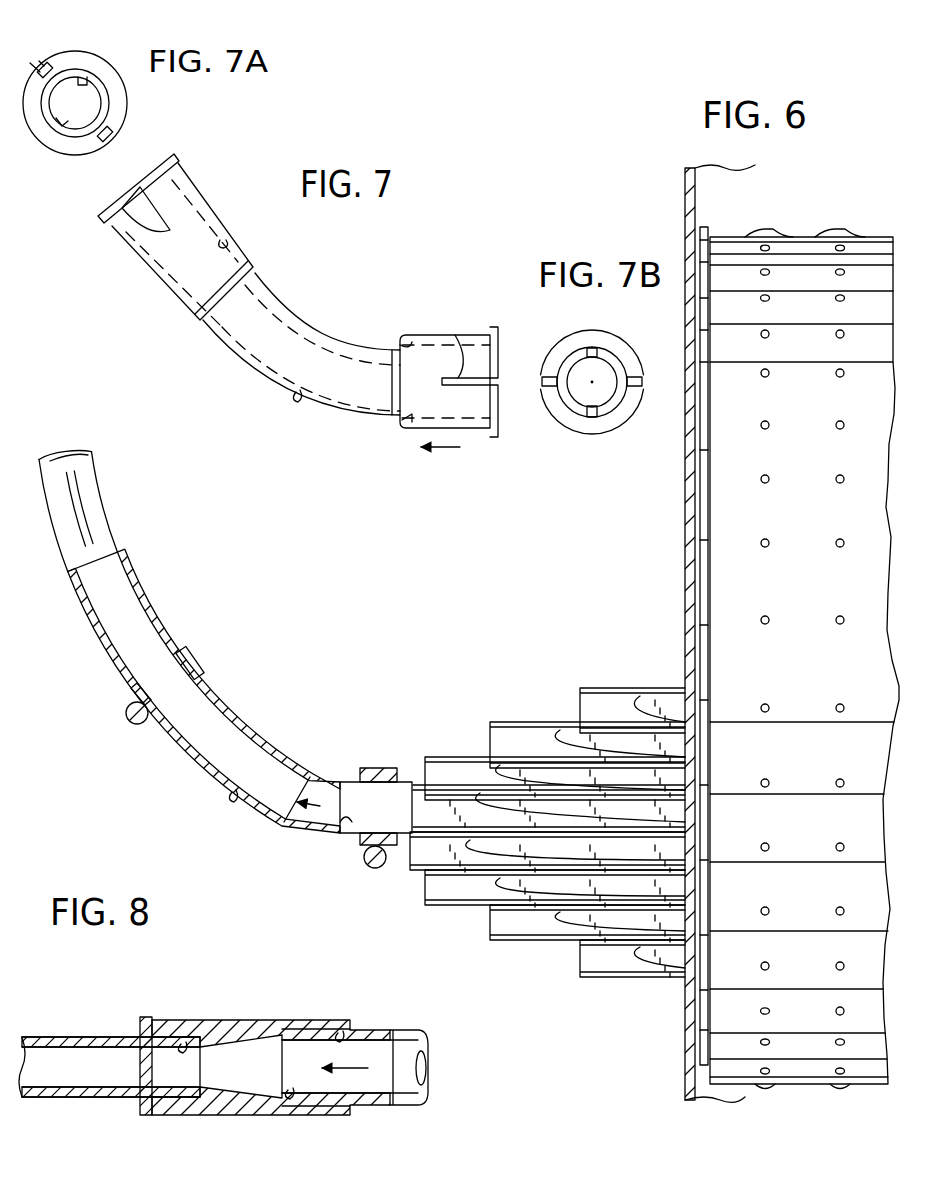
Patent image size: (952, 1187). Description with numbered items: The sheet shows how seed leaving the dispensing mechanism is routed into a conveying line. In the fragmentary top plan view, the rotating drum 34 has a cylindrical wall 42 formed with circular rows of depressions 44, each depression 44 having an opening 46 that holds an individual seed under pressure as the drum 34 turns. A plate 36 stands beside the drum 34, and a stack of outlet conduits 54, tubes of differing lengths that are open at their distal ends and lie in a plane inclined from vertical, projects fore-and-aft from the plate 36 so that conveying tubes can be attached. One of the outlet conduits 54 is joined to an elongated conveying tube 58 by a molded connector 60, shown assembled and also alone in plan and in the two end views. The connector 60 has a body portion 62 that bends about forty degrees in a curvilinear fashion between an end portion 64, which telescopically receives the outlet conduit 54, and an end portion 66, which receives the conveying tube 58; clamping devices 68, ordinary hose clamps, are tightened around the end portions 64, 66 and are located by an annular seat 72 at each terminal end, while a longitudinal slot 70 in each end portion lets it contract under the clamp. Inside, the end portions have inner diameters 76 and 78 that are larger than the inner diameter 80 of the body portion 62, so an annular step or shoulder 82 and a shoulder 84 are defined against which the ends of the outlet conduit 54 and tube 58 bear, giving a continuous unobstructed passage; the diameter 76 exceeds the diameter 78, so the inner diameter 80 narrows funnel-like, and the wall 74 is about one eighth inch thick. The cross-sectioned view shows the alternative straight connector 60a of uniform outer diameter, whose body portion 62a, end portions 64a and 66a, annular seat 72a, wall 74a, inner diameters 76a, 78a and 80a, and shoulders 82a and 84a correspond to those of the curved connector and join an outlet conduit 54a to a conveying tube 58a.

In FIG. 6, the drum 34 is at (810, 1094).
In FIG. 6, the plate 36 is at (684, 548).
In FIG. 6, the cylindrical shell or wall 42 is at (740, 1094).
In FIG. 6, the depressions 44 is at (838, 230).
In FIG. 6, the opening 46 is at (844, 1075).
In FIG. 6, the outlet conduits 54 is at (580, 957).
In FIG. 6, the conveying tubes 58 is at (100, 520).
In FIG. 7, the connector 60 is at (323, 305).
In FIG. 6, the connector 60 is at (304, 752).
In FIG. 7, the body portion 62 is at (255, 385).
In FIG. 6, the body portion 62 is at (286, 833).
In FIG. 7, the end portion 64 is at (465, 331).
In FIG. 6, the end portion 64 is at (341, 772).
In FIG. 7, the end portion 66 is at (209, 194).
In FIG. 6, the end portion 66 is at (242, 704).
In FIG. 6, the clamping devices 68 is at (128, 722).
In FIG. 7A, the longitudinal slot 70 is at (32, 72).
In FIG. 7, the longitudinal slot 70 is at (153, 226).
In FIG. 7B, the longitudinal slot 70 is at (548, 380).
In FIG. 7A, the annular seat 72 is at (128, 110).
In FIG. 7, the annular seat 72 is at (103, 214).
In FIG. 6, the annular seat 72 is at (130, 695).
In FIG. 7, the wall 74 is at (260, 294).
In FIG. 6, the wall 74 is at (266, 758).
In FIG. 7, the inner diameter 76 is at (400, 345).
In FIG. 7B, the inner diameter 76 is at (594, 416).
In FIG. 6, the inner diameter 76 is at (366, 768).
In FIG. 7A, the inner diameter 78 is at (61, 126).
In FIG. 7, the inner diameter 78 is at (229, 245).
In FIG. 6, the inner diameter 78 is at (202, 694).
In FIG. 7A, the inner diameter 80 is at (84, 82).
In FIG. 7, the inner diameter 80 is at (298, 392).
In FIG. 7B, the inner diameter 80 is at (594, 357).
In FIG. 6, the inner diameter 80 is at (232, 796).
In FIG. 7, the annular step or shoulder 82 is at (415, 414).
In FIG. 6, the annular step or shoulder 82 is at (340, 822).
In FIG. 7, the annular step or shoulder 84 is at (188, 310).
In FIG. 6, the annular step or shoulder 84 is at (206, 762).
In FIG. 8, the outlet conduit 54a is at (400, 1030).
In FIG. 8, the conveying tube 58a is at (45, 1033).
In FIG. 8, the connector 60a is at (204, 990).
In FIG. 8, the body portion 62a is at (206, 1117).
In FIG. 8, the end portion 64a is at (336, 1024).
In FIG. 8, the end portion 66a is at (208, 1018).
In FIG. 8, the annular seat 72a is at (146, 1017).
In FIG. 8, the wall 74a is at (345, 1027).
In FIG. 8, the inner diameter 76a is at (346, 1032).
In FIG. 8, the inner diameter 78a is at (190, 1040).
In FIG. 8, the inner diameter 80a is at (214, 1094).
In FIG. 8, the annular step or shoulder 82a is at (293, 1096).
In FIG. 8, the annular step or shoulder 84a is at (188, 1100).